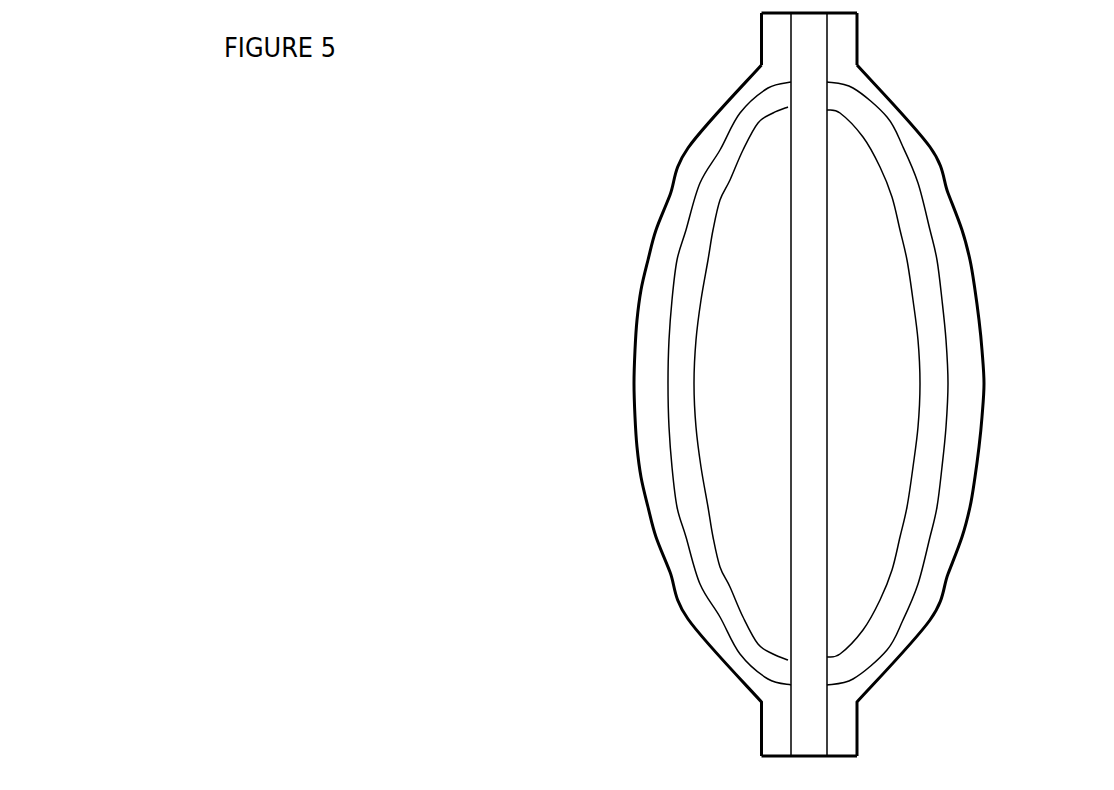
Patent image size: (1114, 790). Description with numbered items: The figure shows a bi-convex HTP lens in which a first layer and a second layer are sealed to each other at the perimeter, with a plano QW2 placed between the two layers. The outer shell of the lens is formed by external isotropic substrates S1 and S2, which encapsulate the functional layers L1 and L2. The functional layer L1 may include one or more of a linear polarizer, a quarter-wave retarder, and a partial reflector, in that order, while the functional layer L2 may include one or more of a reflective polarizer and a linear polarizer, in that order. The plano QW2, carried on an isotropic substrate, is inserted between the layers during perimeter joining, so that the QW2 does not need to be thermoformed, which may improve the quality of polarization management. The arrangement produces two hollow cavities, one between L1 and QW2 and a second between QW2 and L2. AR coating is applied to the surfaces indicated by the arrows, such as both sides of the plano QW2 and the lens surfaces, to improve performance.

The external isotropic substrate S1 is at (712, 384).
The functional layer L1 is at (730, 383).
The plano QW2 is at (809, 384).
The functional layer L2 is at (883, 383).
The external isotropic substrate S2 is at (905, 384).
The AR coating AR is at (677, 210).